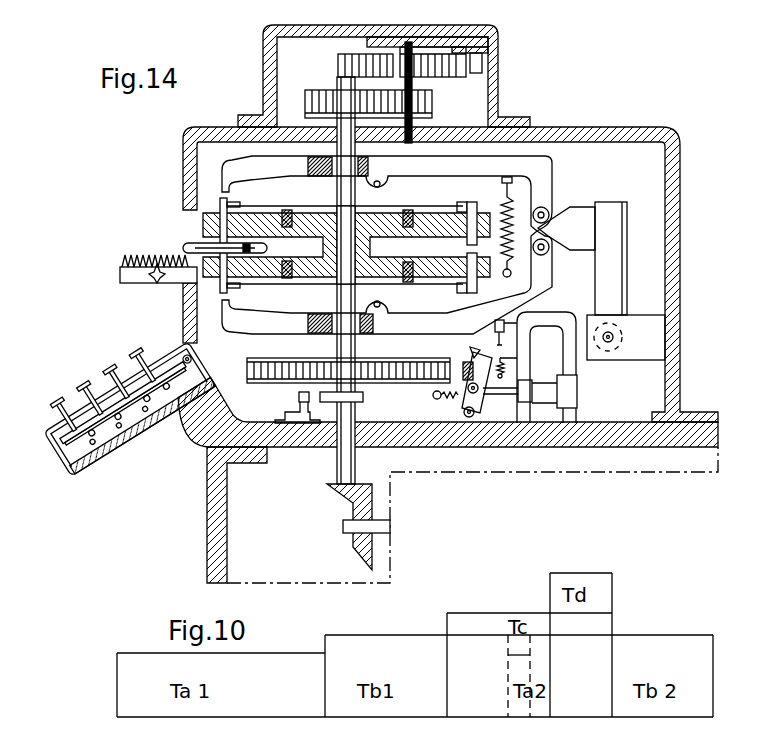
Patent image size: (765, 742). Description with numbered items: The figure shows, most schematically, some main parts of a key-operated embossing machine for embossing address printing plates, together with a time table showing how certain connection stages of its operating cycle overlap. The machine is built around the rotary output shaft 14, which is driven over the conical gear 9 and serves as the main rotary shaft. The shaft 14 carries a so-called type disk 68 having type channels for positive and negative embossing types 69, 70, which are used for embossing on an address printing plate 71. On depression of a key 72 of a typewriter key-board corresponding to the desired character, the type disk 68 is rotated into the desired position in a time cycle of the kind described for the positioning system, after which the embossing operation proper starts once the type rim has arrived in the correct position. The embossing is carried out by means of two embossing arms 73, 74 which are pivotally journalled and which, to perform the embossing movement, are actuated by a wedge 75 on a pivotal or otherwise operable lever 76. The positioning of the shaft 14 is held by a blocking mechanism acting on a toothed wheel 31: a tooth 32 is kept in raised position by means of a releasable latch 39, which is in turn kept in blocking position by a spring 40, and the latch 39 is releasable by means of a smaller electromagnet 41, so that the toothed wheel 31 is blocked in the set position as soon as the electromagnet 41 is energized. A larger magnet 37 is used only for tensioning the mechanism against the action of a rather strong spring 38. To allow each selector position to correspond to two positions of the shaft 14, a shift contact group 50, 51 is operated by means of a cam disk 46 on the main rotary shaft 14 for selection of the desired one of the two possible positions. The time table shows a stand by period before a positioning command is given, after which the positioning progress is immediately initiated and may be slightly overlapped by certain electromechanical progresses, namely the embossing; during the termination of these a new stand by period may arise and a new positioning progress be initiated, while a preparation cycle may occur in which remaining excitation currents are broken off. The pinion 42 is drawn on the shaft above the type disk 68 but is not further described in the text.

The conical gear 9 is at (373, 508).
The output shaft 14 is at (341, 407).
The toothed wheel 31 is at (395, 365).
The tooth 32 is at (466, 364).
The larger magnet 37 is at (557, 398).
The spring 38 is at (451, 400).
The releasable latch 39 is at (472, 351).
The spring 40 is at (507, 363).
The smaller electromagnet 41 is at (520, 313).
The pinion gear 42 is at (463, 73).
The cam disk 46 is at (363, 397).
The shift contact group 50 is at (300, 400).
The shift contact group 51 is at (283, 402).
The type disk 68 is at (478, 232).
The embossing type 69 is at (220, 207).
The embossing type 70 is at (223, 283).
The address printing plate 71 is at (213, 245).
The key 72 is at (105, 378).
The embossing arm 73 is at (237, 168).
The embossing arm 74 is at (217, 320).
The wedge 75 is at (575, 218).
The lever 76 is at (618, 265).